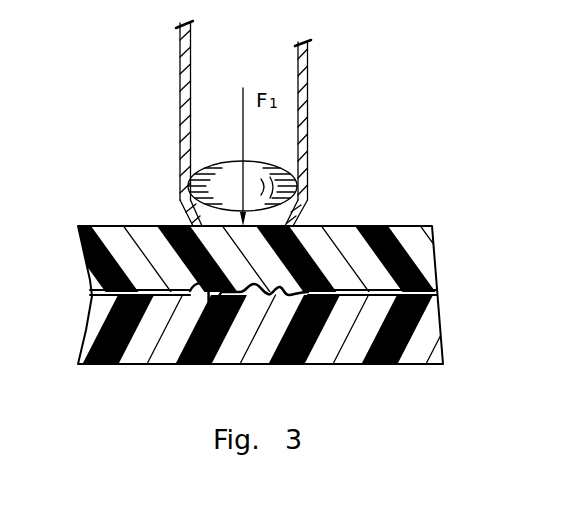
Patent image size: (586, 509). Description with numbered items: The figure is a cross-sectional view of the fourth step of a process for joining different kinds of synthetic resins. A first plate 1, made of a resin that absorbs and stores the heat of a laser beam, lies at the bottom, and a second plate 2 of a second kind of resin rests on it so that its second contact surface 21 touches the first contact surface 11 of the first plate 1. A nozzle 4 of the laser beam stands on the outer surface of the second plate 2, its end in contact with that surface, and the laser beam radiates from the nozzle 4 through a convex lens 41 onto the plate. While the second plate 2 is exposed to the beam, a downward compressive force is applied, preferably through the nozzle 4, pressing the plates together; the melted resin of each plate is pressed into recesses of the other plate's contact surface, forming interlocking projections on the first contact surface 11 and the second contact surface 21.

The first plate 1 is at (399, 355).
The second plate 2 is at (403, 236).
The nozzle 4 is at (307, 100).
The convex lens 41 is at (293, 173).
The first contact surface 11 is at (378, 292).
The second contact surface 21 is at (114, 291).